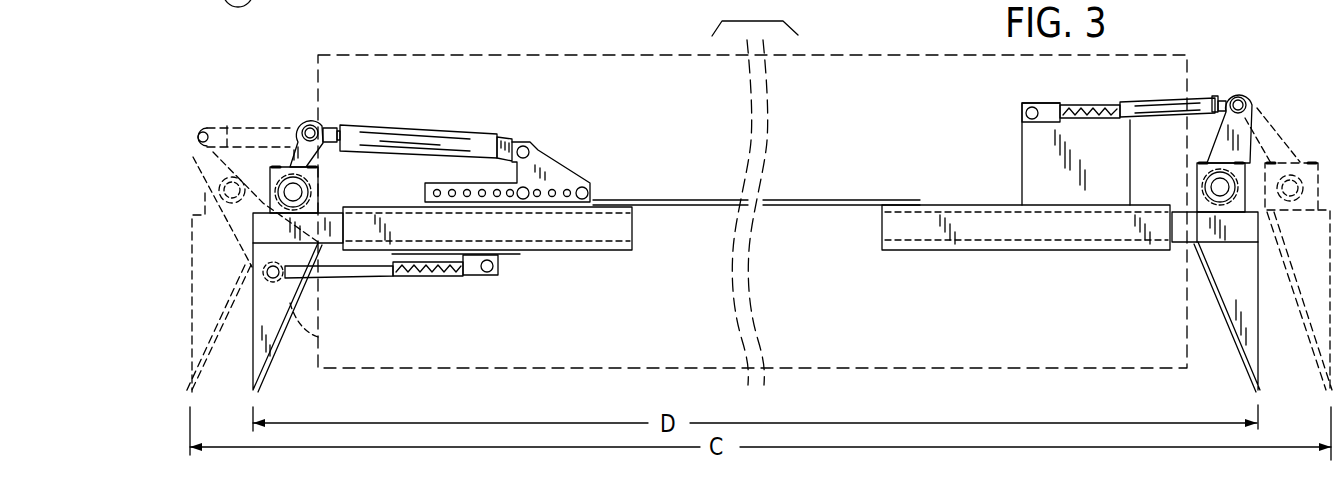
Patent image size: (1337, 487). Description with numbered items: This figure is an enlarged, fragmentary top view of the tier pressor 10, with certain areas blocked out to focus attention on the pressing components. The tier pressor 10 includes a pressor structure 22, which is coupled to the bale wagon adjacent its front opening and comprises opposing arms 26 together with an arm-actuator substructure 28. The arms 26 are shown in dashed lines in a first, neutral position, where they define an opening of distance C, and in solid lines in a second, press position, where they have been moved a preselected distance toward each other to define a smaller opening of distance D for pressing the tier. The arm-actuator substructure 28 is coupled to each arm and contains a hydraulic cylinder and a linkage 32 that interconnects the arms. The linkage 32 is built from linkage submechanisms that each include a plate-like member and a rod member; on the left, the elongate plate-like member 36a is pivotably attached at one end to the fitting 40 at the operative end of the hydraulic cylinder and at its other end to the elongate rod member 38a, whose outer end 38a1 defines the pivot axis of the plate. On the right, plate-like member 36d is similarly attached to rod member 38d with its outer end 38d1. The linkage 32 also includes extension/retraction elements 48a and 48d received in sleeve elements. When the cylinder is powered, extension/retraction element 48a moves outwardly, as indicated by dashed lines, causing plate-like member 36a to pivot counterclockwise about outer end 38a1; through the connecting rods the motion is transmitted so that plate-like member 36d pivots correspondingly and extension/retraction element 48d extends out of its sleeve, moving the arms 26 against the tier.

The tier pressor 10 is at (243, 111).
The pressor structure 22 is at (1275, 369).
The opposing arms 26 is at (272, 358).
The arm-actuator substructure 28 is at (415, 124).
The linkage 32 is at (261, 3).
The plate-like member 36a is at (291, 133).
The plate-like member 36d is at (1318, 100).
The rod member 38a is at (330, 280).
The outer end of rod member 38a1 is at (374, 350).
The rod member 38d is at (1162, 100).
The outer end of rod member 38d1 is at (1237, 93).
The fitting 40 is at (328, 128).
The extension/retraction element 48a is at (332, 213).
The extension/retraction element 48d is at (1173, 250).